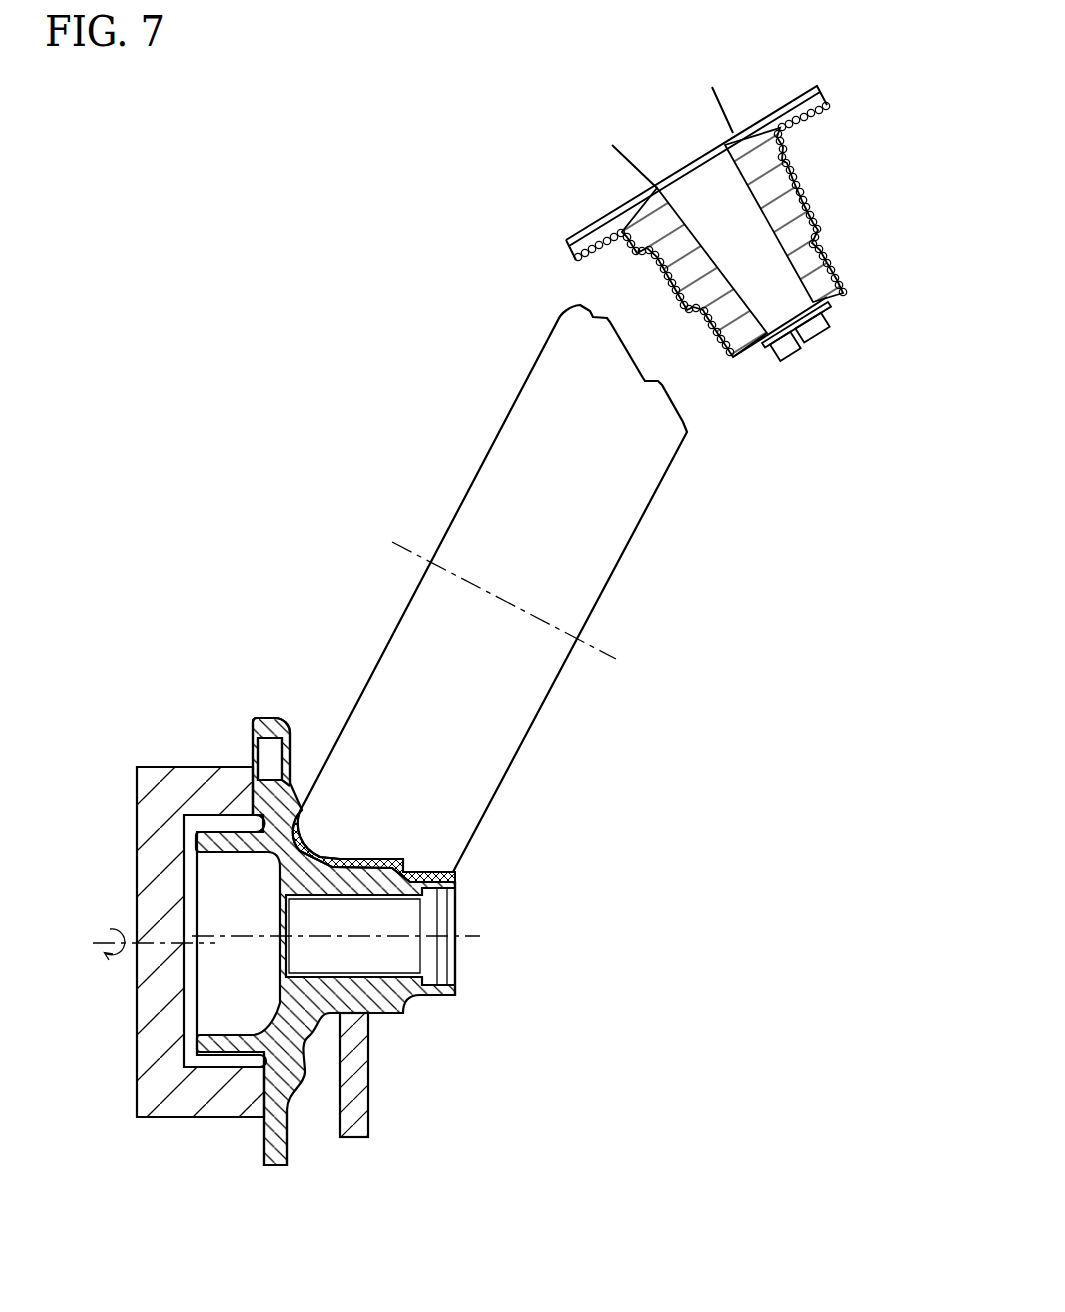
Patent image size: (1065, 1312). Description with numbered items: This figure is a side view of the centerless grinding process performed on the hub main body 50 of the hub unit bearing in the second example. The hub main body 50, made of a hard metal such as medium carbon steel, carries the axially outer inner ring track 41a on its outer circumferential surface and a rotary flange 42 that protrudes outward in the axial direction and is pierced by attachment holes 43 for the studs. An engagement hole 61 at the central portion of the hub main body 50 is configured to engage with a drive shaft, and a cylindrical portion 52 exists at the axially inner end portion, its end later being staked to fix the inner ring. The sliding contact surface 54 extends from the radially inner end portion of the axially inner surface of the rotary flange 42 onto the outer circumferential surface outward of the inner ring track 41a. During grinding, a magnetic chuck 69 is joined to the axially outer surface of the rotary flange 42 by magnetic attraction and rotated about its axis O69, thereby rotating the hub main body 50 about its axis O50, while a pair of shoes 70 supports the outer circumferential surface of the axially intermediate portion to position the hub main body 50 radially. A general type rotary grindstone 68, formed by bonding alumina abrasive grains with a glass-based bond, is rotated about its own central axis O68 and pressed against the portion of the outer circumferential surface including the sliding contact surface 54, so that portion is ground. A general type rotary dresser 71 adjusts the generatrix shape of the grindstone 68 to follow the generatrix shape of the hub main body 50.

The inner ring track 41a is at (346, 857).
The rotary flange 42 is at (271, 725).
The attachment holes 43 is at (270, 753).
The hub main body 50 is at (388, 1002).
The cylindrical portion 52 is at (437, 987).
The sliding contact surface 54 is at (314, 1031).
The engagement hole 61 is at (382, 968).
The grindstone 68 is at (508, 752).
The magnetic chuck 69 is at (148, 1060).
The shoes 70 is at (360, 1087).
The rotary dresser 71 is at (808, 208).
The axis of hub O50 is at (463, 932).
The central axis O68 is at (605, 653).
The axis of rotating body O69 is at (110, 940).